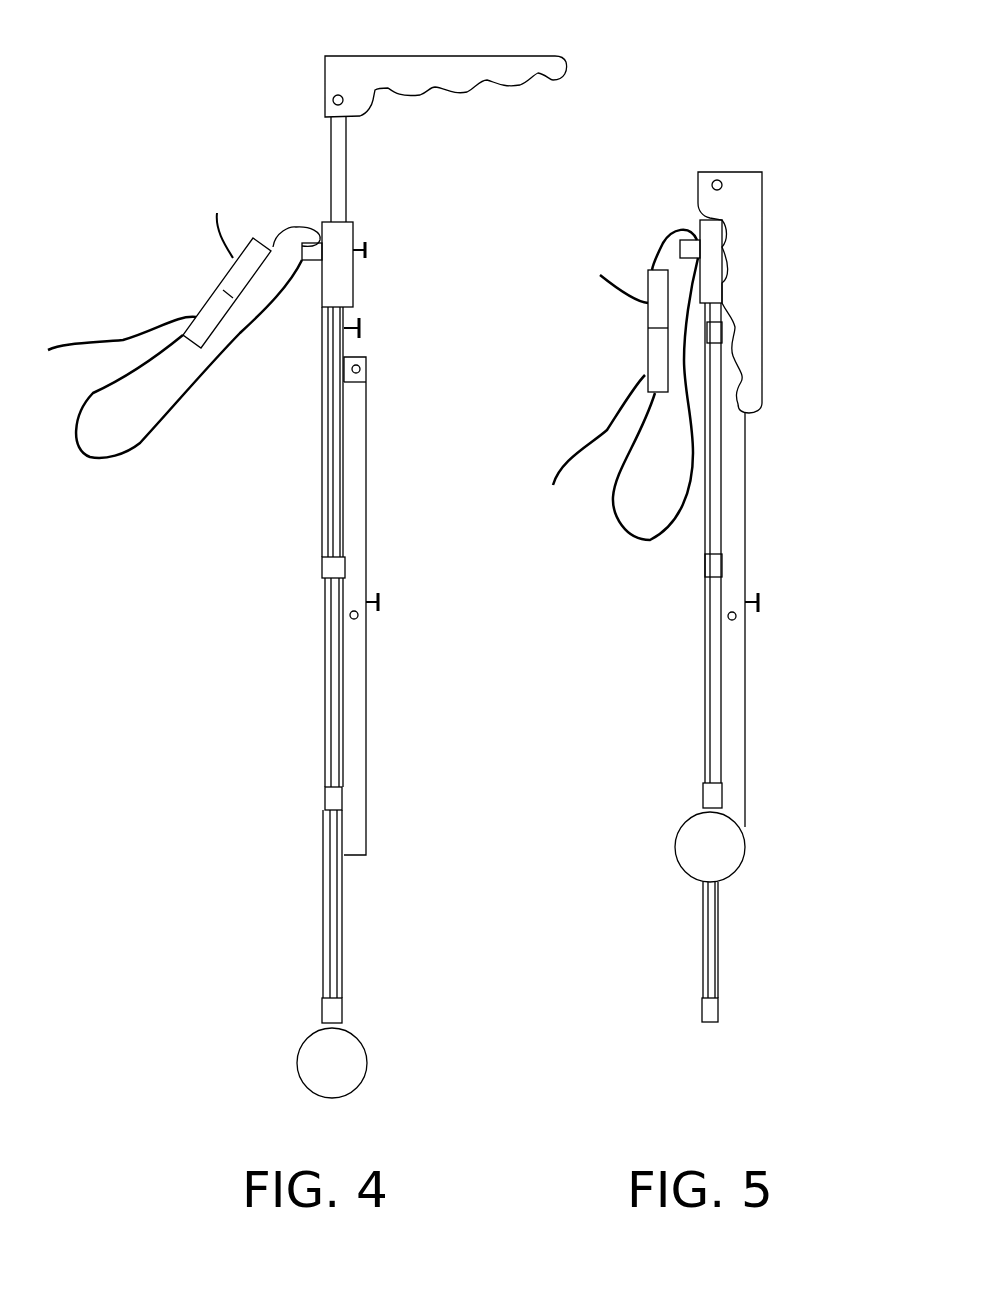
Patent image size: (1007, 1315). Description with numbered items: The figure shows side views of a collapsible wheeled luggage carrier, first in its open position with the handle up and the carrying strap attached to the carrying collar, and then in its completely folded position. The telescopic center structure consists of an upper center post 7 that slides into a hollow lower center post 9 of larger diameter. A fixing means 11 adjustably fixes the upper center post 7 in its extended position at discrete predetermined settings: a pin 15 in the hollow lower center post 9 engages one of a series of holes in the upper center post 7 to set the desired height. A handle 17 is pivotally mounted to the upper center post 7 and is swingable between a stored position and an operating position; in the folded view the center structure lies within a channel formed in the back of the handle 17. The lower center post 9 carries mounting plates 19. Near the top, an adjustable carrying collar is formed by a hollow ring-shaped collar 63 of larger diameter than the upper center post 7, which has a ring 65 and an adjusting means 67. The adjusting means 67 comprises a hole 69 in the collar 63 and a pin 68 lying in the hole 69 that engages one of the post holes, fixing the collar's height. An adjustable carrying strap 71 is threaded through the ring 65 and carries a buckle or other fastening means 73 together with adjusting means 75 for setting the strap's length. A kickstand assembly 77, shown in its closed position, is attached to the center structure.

In FIG. 4, the upper center post 7 is at (327, 133).
In FIG. 4, the hollow lower center post 9 is at (337, 410).
In FIG. 5, the hollow lower center post 9 is at (710, 662).
In FIG. 4, the fixing means 11 is at (372, 340).
In FIG. 4, the pin 15 is at (362, 326).
In FIG. 4, the handle 17 is at (443, 55).
In FIG. 5, the handle 17 is at (757, 330).
In FIG. 4, the mounting plates 19 is at (323, 578).
In FIG. 4, the hollow ring-shaped collar 63 is at (355, 226).
In FIG. 5, the hollow ring-shaped collar 63 is at (711, 261).
In FIG. 4, the ring 65 is at (275, 228).
In FIG. 5, the ring 65 is at (690, 249).
In FIG. 4, the adjusting means 67 is at (393, 223).
In FIG. 4, the pin 68 is at (367, 250).
In FIG. 4, the hole 69 is at (356, 262).
In FIG. 4, the adjustable carrying strap 71 is at (100, 457).
In FIG. 5, the adjustable carrying strap 71 is at (660, 540).
In FIG. 4, the buckle or other known fastening means 73 is at (222, 280).
In FIG. 5, the buckle or other known fastening means 73 is at (648, 285).
In FIG. 4, the known adjusting means 75 is at (193, 308).
In FIG. 4, the kickstand assembly 77 is at (366, 683).
In FIG. 5, the kickstand assembly 77 is at (743, 620).